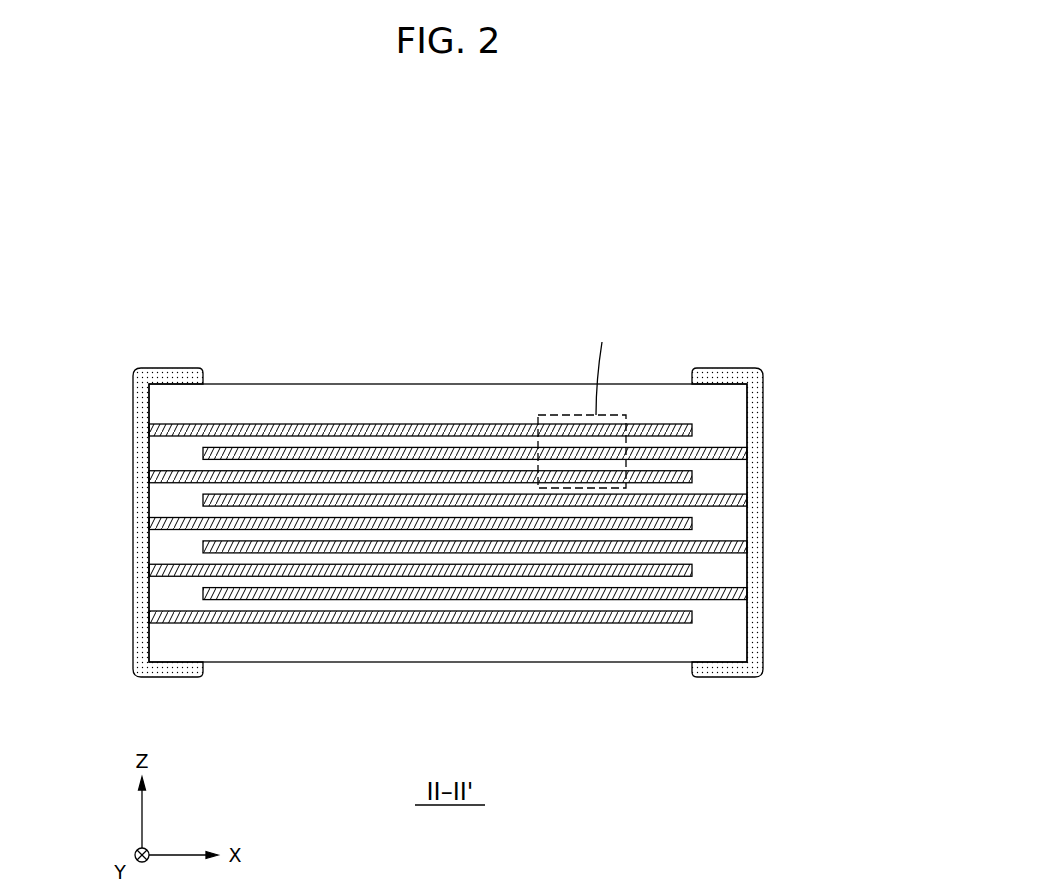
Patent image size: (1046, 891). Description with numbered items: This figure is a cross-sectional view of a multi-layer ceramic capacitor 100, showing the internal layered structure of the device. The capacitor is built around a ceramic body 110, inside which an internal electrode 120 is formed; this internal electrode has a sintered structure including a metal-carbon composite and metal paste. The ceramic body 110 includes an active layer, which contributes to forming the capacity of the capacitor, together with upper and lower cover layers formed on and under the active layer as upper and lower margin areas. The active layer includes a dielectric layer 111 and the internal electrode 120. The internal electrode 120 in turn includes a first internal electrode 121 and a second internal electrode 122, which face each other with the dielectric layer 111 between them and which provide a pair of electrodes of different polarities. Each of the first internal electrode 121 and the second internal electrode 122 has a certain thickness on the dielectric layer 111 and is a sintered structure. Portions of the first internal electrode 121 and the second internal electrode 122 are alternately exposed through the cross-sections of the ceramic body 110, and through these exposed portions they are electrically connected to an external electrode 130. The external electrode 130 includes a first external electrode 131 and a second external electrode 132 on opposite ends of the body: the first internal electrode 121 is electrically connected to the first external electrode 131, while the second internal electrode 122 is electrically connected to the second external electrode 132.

The multi-layer ceramic capacitor 100 is at (744, 231).
The ceramic body 110 is at (532, 384).
The dielectric layer 111 is at (322, 443).
The internal electrode 120 is at (365, 311).
The first internal electrode 121 is at (396, 427).
The second internal electrode 122 is at (443, 455).
The external electrode 130 is at (717, 803).
The first external electrode 131 is at (172, 370).
The second external electrode 132 is at (725, 370).